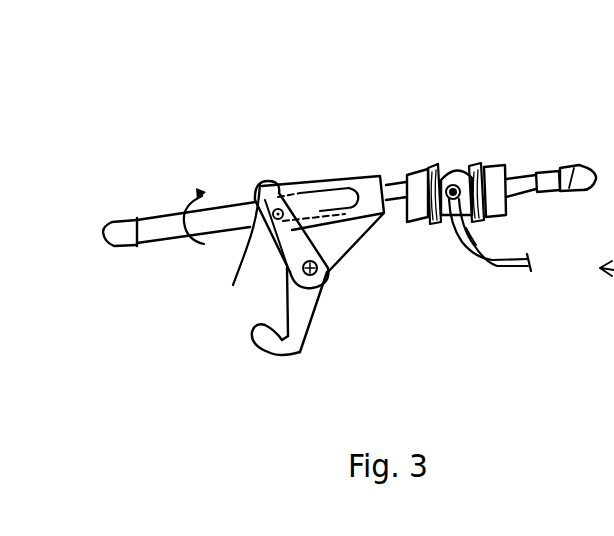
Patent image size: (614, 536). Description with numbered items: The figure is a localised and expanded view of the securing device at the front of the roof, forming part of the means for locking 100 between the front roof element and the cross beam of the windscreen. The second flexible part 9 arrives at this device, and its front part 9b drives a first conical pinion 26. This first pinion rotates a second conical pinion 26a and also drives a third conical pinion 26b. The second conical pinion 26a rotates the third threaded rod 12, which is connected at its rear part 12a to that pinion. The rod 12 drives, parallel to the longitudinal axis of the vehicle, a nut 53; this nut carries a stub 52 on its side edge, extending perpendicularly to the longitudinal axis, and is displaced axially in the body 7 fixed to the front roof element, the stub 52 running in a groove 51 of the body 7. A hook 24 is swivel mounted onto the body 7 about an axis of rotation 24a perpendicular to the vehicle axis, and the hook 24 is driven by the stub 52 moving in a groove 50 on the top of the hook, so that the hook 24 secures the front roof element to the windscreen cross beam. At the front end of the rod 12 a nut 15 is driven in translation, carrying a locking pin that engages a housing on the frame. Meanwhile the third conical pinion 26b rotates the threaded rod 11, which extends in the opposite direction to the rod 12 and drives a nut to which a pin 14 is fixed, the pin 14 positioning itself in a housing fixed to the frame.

The means for locking 100 is at (262, 136).
The nut 15 is at (111, 222).
The third threaded rod 12 is at (155, 224).
The rear part of the rod 12a is at (415, 230).
The groove 51 is at (366, 177).
The nut 53 is at (322, 181).
The groove 50 is at (263, 182).
The stub 52 is at (272, 225).
The body 7 is at (341, 240).
The axis of rotation 24a is at (328, 274).
The hook 24 is at (273, 360).
The second conical pinion 26a is at (414, 169).
The first conical pinion 26 is at (447, 168).
The third conical pinion 26b is at (492, 165).
The second flexible part 9 is at (481, 266).
The front part of the flexible part 9b is at (476, 245).
The threaded rod 11 is at (547, 165).
The pin 14 is at (572, 193).